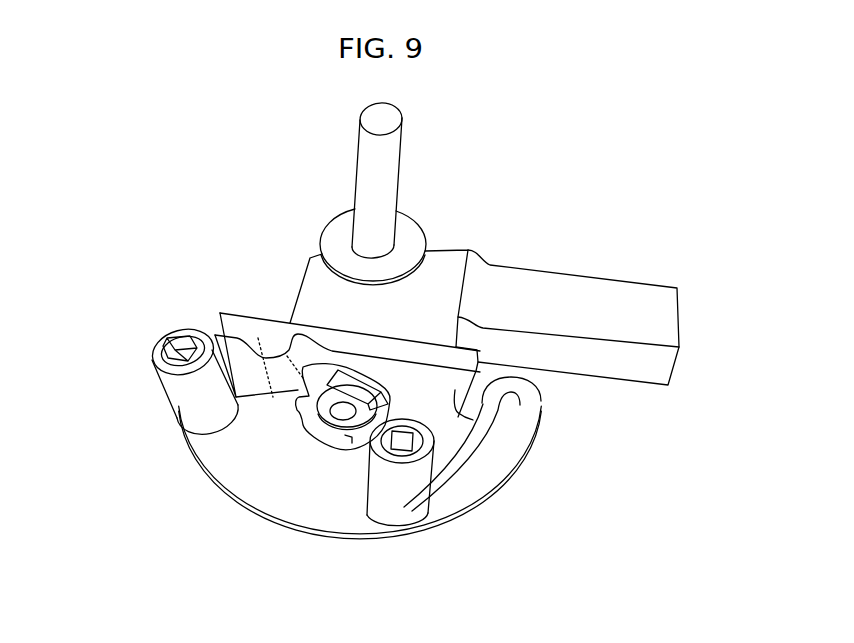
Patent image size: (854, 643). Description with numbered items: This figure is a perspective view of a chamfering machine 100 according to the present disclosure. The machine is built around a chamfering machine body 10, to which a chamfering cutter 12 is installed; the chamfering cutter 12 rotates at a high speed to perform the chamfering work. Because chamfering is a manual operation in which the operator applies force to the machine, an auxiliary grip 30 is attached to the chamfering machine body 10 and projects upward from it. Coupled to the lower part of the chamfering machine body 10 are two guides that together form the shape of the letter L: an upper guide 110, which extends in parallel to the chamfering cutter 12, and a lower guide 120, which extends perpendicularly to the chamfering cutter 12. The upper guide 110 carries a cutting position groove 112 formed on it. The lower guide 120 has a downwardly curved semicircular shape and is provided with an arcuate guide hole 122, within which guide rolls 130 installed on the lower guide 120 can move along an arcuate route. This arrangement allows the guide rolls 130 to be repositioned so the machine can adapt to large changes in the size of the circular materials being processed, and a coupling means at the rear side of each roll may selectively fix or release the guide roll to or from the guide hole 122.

The chamfering machine 100 is at (259, 120).
The chamfering machine body 10 is at (315, 293).
The chamfering cutter 12 is at (313, 442).
The auxiliary grip 30 is at (392, 185).
The upper guide 110 is at (392, 417).
The cutting position groove 112 is at (252, 323).
The lower guide 120 is at (240, 477).
The arcuate guide hole 122 is at (458, 484).
The guide rolls 130 is at (182, 397).